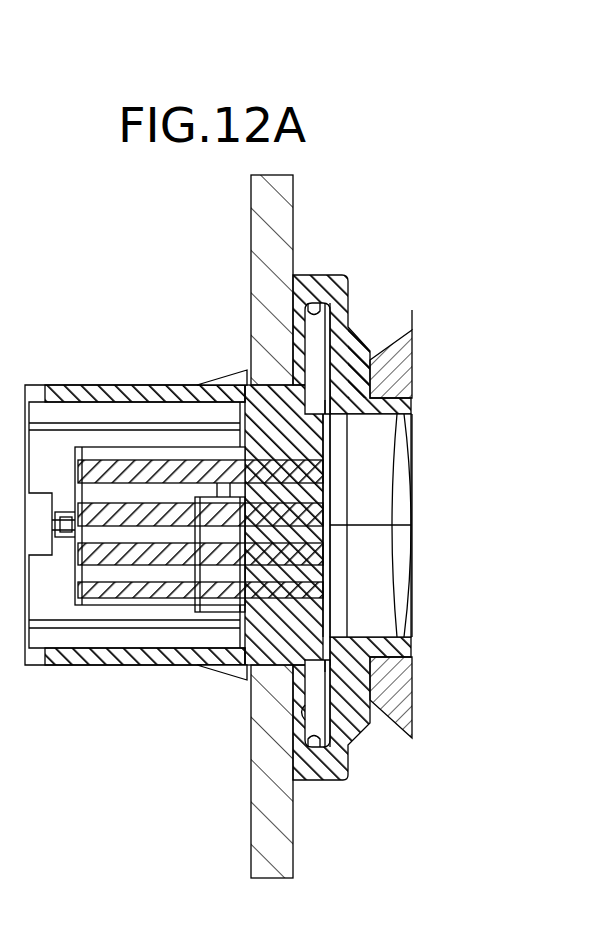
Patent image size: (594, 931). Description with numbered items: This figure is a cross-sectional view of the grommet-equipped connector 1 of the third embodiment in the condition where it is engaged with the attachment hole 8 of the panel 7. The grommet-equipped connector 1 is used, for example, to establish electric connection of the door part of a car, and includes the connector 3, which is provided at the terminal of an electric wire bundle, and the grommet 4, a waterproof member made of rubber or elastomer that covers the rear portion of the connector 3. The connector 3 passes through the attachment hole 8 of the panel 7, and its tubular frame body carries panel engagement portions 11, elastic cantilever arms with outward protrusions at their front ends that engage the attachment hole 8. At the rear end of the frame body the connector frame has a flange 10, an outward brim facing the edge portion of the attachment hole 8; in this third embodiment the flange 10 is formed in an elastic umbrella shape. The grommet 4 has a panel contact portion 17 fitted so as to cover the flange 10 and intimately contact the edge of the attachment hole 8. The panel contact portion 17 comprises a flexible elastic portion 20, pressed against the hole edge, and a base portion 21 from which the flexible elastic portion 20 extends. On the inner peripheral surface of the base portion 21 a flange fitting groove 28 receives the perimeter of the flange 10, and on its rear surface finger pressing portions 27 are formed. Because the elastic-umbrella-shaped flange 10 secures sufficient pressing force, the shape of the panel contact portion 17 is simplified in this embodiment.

The grommet-equipped connector 1 is at (118, 358).
The connector 3 is at (52, 672).
The grommet 4 is at (369, 716).
The panel 7 is at (270, 212).
The attachment hole 8 is at (253, 388).
The flange 10 is at (310, 365).
The panel engagement portion 11 is at (222, 374).
The panel contact portion 17 is at (105, 813).
The flexible elastic portion 20 is at (300, 714).
The base portion 21 is at (322, 782).
The finger pressing portion 27 is at (372, 362).
The flange fitting groove 28 is at (318, 300).